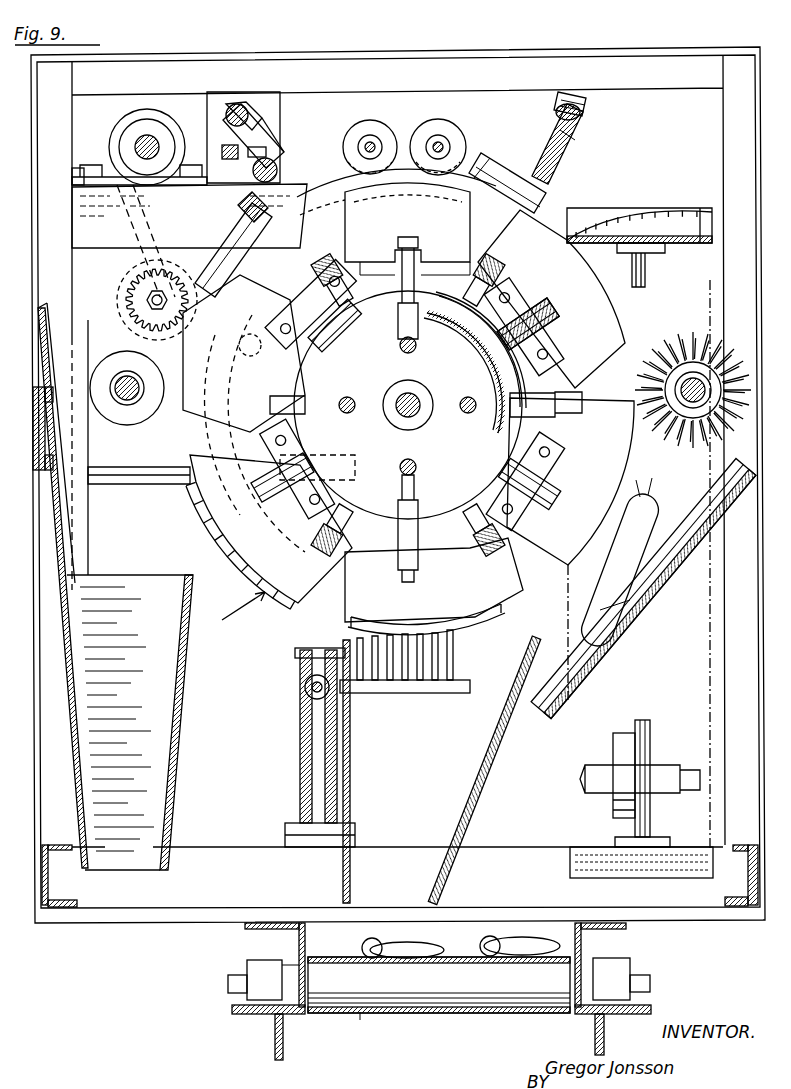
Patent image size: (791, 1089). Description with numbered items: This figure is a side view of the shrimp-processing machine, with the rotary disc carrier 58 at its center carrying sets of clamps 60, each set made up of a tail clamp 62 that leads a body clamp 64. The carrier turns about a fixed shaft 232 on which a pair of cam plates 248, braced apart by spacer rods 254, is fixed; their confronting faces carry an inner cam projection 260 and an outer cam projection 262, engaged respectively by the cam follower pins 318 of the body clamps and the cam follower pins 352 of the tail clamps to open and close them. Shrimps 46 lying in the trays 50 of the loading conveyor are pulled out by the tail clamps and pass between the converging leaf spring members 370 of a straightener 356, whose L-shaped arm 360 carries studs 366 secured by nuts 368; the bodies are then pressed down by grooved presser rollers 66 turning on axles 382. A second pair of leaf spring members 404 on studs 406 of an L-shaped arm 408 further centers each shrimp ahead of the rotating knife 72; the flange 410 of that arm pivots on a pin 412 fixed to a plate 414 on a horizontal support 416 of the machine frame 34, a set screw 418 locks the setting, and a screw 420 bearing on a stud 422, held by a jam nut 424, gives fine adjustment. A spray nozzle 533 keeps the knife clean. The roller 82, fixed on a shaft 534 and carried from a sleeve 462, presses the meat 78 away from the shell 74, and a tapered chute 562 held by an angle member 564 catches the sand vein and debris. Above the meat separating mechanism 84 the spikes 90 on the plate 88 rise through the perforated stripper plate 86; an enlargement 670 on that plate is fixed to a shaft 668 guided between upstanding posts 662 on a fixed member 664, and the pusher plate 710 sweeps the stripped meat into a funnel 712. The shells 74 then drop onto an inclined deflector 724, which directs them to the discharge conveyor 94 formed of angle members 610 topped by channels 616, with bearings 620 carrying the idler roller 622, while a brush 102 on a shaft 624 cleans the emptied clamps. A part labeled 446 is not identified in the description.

The set screw 418 is at (232, 105).
The pin 412 is at (240, 104).
The upstanding flange 410 is at (255, 120).
The sleeve 462 is at (140, 142).
The plate 414 is at (210, 100).
The L-shaped arm 408 is at (283, 150).
The axles 382 is at (370, 140).
The presser rollers 66 is at (385, 190).
The studs 366 is at (565, 122).
The nuts 368 is at (585, 98).
The shrimp 46 is at (400, 160).
The body clamp 64 is at (188, 485).
The L-shaped arm 360 is at (582, 114).
The straightener 356 is at (588, 136).
The leaf spring members 370 is at (508, 178).
The jam nut 424 is at (222, 150).
The screw 420 is at (267, 150).
The stud 422 is at (275, 165).
The bracket 446 is at (78, 178).
The tail clamp 62 is at (318, 222).
The conveyor trays 50 is at (690, 215).
The horizontal support 416 is at (90, 222).
The studs 406 is at (240, 205).
The leaf spring members 404 is at (215, 235).
The cam follower pins 352 is at (350, 262).
The cam follower pins 318 is at (455, 262).
The rotating knife 72 is at (135, 290).
The spray nozzle 533 is at (130, 296).
The brush 102 is at (700, 345).
The shaft 624 is at (668, 370).
The shaft 534 is at (120, 370).
The inner cam projection 260 is at (445, 395).
The outer cam projection 262 is at (550, 335).
The clamp sets 60 is at (349, 403).
The spacer rods 254 is at (370, 416).
The fixed shaft 232 is at (406, 470).
The roller 82 is at (118, 416).
The cam plates 248 is at (520, 490).
The deflector 724 is at (690, 575).
The shell 74 is at (640, 612).
The angle member 564 is at (90, 575).
The carrier 58 is at (231, 612).
The pusher plate 710 is at (360, 625).
The stripper plate 86 is at (405, 632).
The enlargement 670 is at (303, 682).
The shaft 668 is at (305, 690).
The upstanding posts 662 is at (335, 727).
The spikes 90 is at (405, 690).
The plate 88 is at (462, 688).
The meat separating mechanism 84 is at (431, 713).
The funnel or chute 712 is at (493, 765).
The chute or funnel 562 is at (148, 779).
The fixed member 664 is at (294, 825).
The machine frame 34 is at (725, 808).
The meat 78 is at (395, 940).
The bearings 620 is at (260, 965).
The channels 616 is at (299, 939).
The angle members 610 is at (275, 1042).
The idler roller 622 is at (530, 990).
The discharge conveyor 94 is at (359, 1027).